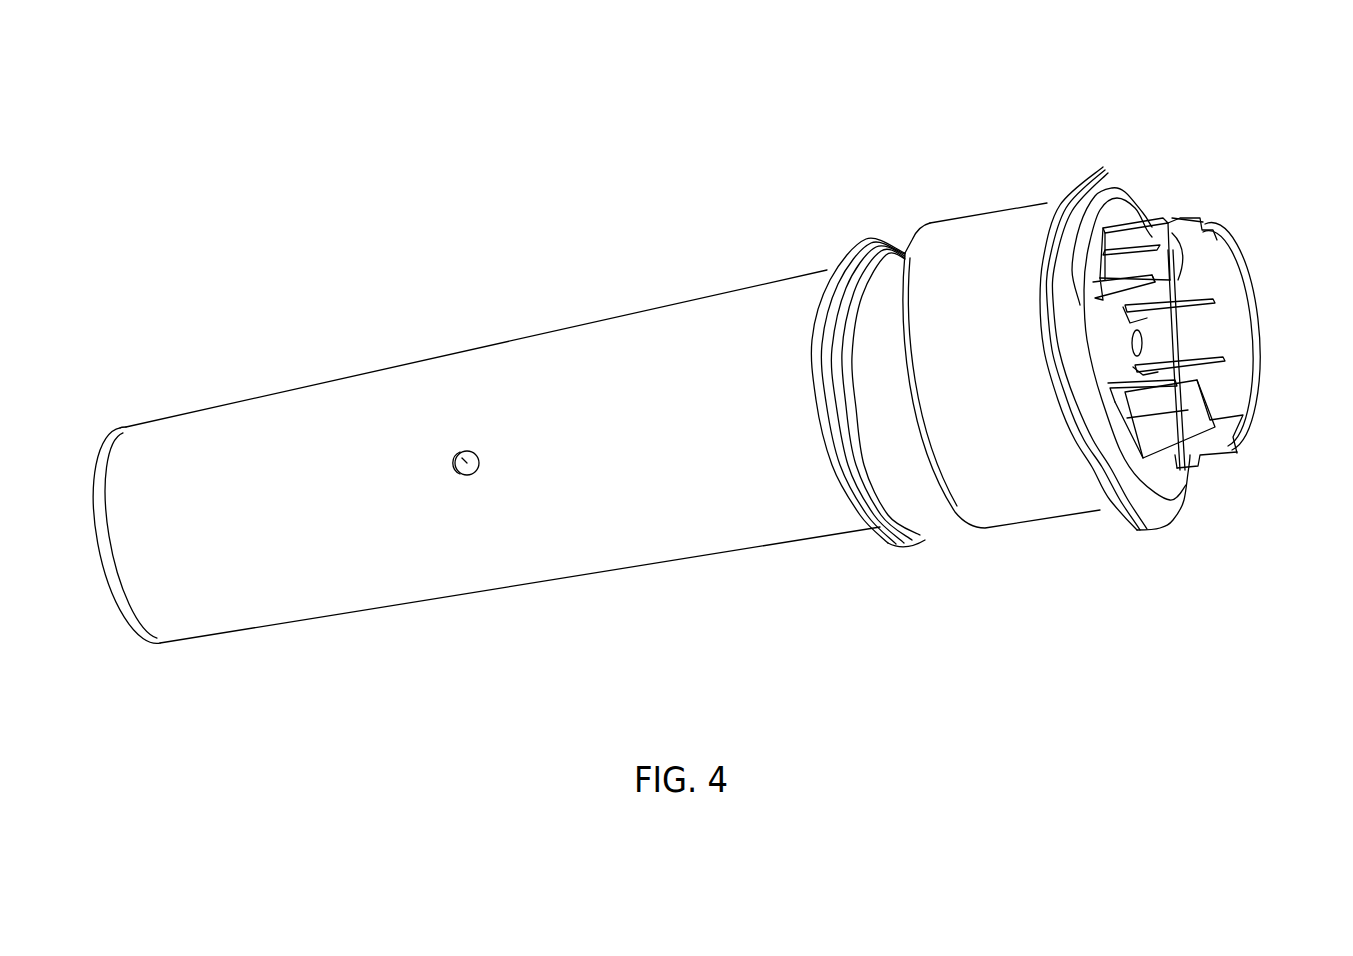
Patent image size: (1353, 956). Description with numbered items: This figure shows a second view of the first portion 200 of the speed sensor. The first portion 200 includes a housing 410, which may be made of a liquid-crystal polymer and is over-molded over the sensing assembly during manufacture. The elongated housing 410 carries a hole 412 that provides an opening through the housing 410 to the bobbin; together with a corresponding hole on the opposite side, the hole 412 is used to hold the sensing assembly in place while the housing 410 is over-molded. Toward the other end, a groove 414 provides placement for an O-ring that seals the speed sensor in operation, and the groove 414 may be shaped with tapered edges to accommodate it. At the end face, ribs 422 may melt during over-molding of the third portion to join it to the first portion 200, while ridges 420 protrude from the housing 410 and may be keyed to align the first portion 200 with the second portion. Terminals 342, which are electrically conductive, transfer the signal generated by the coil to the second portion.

The first portion 200 is at (194, 140).
The housing 410 is at (560, 366).
The hole 412 is at (462, 450).
The groove 414 is at (907, 260).
The ribs 422 is at (1078, 170).
The ridges 420 is at (1178, 215).
The terminals 342 is at (1217, 308).